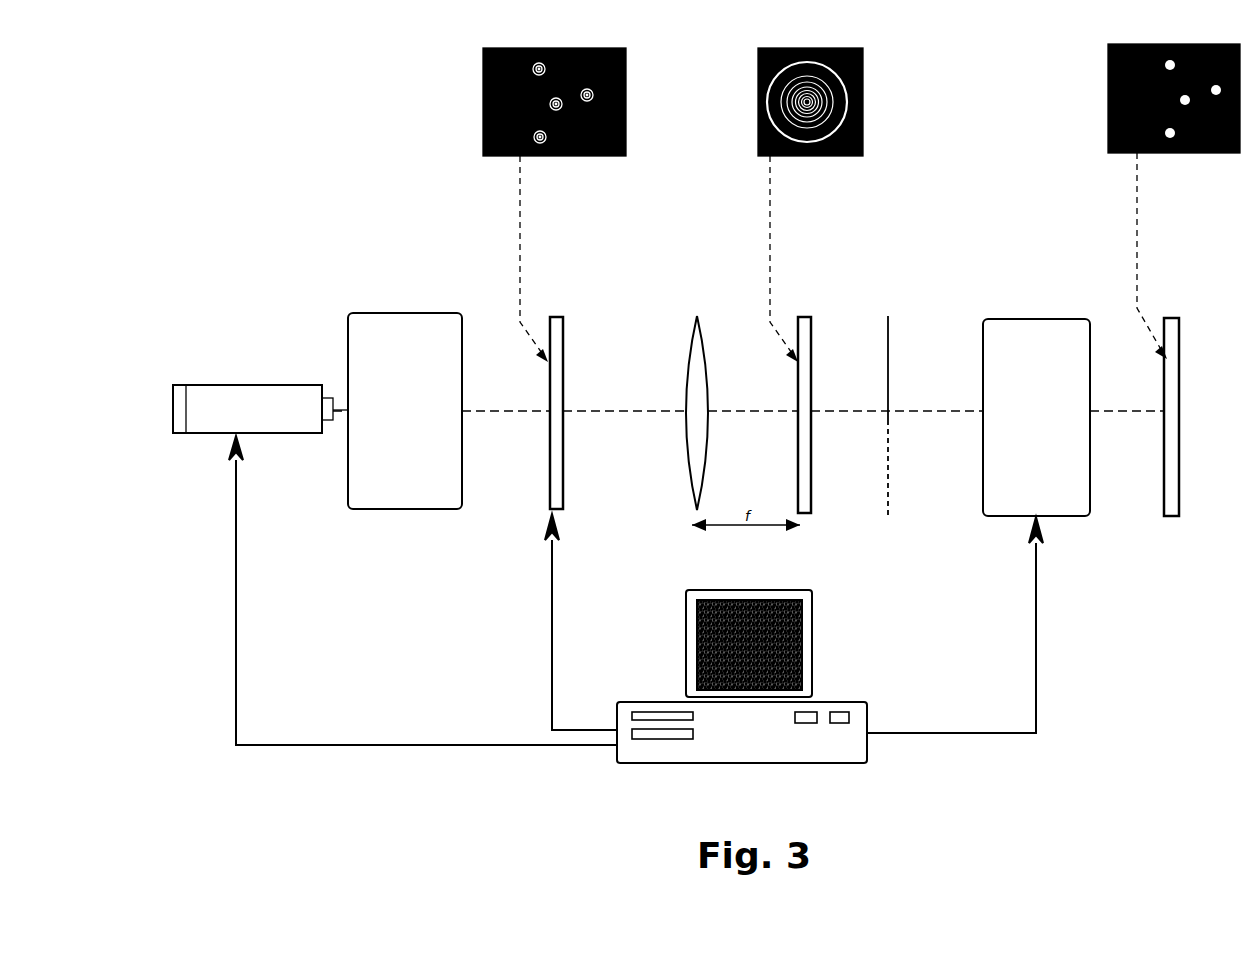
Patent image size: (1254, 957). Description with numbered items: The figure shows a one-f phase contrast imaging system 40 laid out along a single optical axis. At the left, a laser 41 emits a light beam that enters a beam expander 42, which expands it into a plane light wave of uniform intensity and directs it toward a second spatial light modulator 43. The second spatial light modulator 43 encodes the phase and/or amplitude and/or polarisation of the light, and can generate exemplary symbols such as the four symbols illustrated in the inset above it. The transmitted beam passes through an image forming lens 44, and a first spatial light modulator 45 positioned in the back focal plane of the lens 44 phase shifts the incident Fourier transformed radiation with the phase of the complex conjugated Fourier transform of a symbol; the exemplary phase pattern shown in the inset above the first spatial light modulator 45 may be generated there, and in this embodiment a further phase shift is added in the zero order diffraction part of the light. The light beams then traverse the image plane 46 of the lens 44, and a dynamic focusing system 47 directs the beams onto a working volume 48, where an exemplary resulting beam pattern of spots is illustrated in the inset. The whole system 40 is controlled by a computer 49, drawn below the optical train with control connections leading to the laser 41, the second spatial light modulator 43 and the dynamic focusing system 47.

The phase contrast imaging system 40 is at (1048, 750).
The laser 41 is at (220, 400).
The beam expander 42 is at (392, 330).
The second spatial light modulator 43 is at (560, 330).
The image forming lens 44 is at (699, 332).
The first spatial light modulator 45 is at (815, 338).
The image plane 46 is at (892, 340).
The dynamic focusing system 47 is at (1045, 337).
The working volume 48 is at (1180, 332).
The computer 49 is at (858, 724).